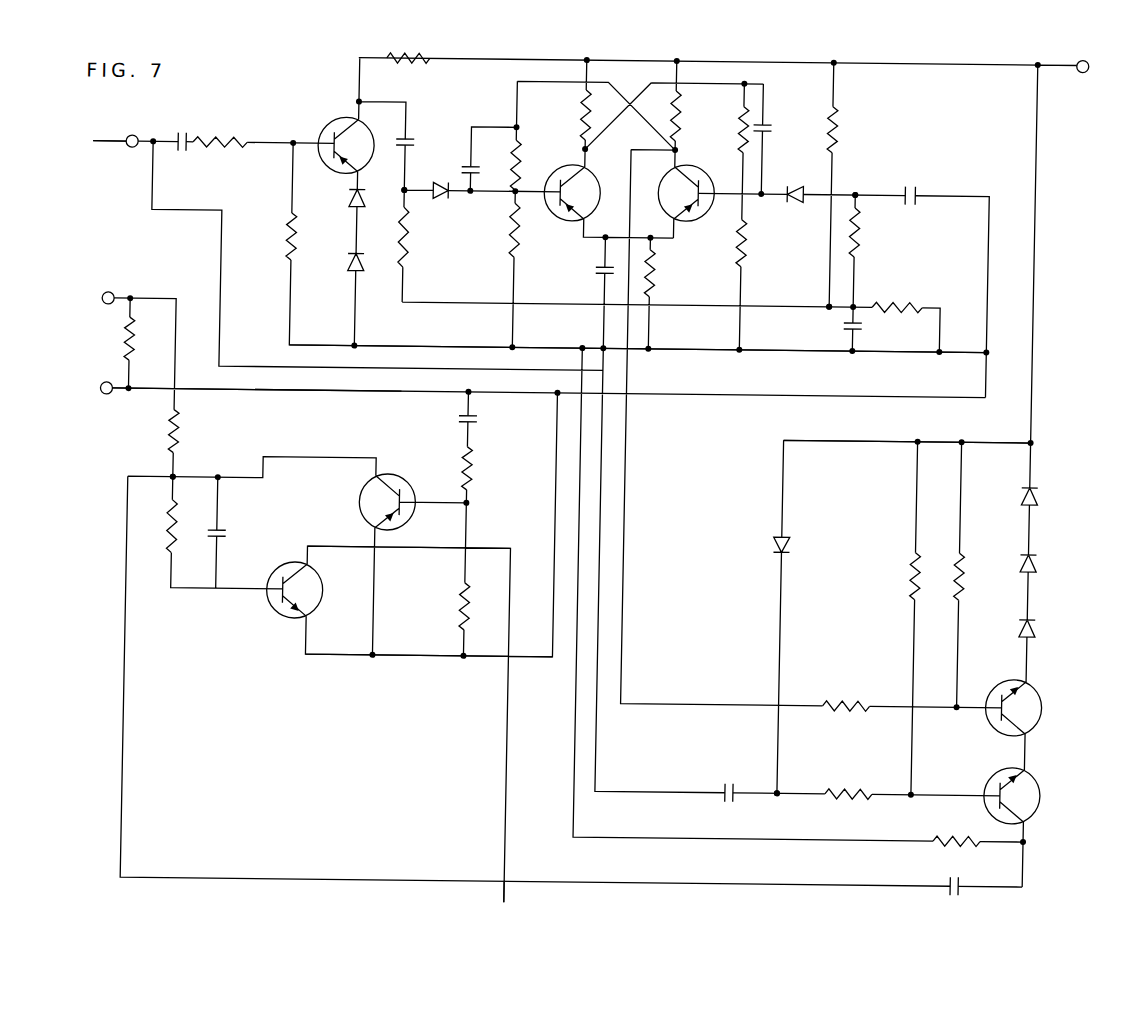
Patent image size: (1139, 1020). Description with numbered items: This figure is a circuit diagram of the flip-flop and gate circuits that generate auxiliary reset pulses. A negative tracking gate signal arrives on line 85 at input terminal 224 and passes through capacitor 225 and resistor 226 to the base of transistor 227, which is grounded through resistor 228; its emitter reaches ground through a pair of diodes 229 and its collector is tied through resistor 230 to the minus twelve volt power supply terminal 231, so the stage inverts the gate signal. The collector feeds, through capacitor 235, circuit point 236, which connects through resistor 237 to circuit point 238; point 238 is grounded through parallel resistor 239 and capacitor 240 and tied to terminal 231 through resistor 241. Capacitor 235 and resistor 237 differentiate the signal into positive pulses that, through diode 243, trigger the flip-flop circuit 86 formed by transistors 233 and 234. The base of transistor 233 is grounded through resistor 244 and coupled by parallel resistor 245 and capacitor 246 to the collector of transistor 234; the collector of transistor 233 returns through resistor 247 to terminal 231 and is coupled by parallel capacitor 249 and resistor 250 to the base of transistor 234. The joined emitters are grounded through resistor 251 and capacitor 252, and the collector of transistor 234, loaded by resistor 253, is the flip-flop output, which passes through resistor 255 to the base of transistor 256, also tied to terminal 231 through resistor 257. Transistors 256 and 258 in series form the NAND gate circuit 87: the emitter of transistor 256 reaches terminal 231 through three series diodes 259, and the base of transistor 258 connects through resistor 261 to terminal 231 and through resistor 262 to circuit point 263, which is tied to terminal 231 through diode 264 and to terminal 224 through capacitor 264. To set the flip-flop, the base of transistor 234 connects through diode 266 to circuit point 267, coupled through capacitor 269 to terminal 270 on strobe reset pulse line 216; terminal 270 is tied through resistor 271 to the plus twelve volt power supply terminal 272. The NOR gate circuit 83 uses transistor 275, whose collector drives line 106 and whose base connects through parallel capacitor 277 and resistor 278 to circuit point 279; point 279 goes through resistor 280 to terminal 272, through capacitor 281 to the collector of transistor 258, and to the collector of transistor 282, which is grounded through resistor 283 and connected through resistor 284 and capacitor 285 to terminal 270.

The tracking gate signal line 85 is at (89, 148).
The input terminal 224 is at (128, 140).
The capacitor 225 is at (181, 139).
The resistor 226 is at (206, 154).
The transistor 227 is at (325, 126).
The resistor 228 is at (283, 243).
The pair of diodes 229 is at (348, 256).
The resistor 230 is at (392, 59).
The power supply terminal 231 is at (1073, 72).
The transistor 233 is at (558, 213).
The transistor 234 is at (687, 212).
The capacitor 235 is at (402, 142).
The circuit point 236 is at (400, 190).
The resistor 237 is at (401, 242).
The circuit point 238 is at (825, 304).
The resistor 239 is at (879, 304).
The capacitor 240 is at (840, 329).
The resistor 241 is at (829, 135).
The diode 243 is at (433, 198).
The resistor 244 is at (509, 251).
The resistor 245 is at (511, 171).
The capacitor 246 is at (466, 166).
The resistor 247 is at (573, 117).
The capacitor 249 is at (761, 128).
The resistor 250 is at (731, 134).
The resistor 251 is at (651, 277).
The capacitor 252 is at (594, 275).
The resistor 253 is at (670, 113).
The resistor 255 is at (844, 700).
The transistor 256 is at (1035, 697).
The resistor 257 is at (964, 584).
The transistor 258 is at (1034, 787).
The three diodes 259 is at (1034, 614).
The resistor 261 is at (914, 574).
The resistor 262 is at (843, 794).
The circuit point 263 is at (783, 791).
The diode and capacitor 264 is at (853, 237).
The diode 266 is at (790, 200).
The circuit point 267 is at (852, 192).
The capacitor 269 is at (915, 196).
The strobe reset pulse input terminal 270 is at (107, 398).
The resistor 271 is at (129, 365).
The power supply terminal 272 is at (110, 298).
The transistor 275 is at (313, 603).
The capacitor 277 is at (218, 537).
The resistor 278 is at (173, 511).
The circuit point 279 is at (170, 479).
The resistor 280 is at (174, 444).
The capacitor 281 is at (968, 881).
The transistor 282 is at (382, 479).
The resistor 283 is at (460, 608).
The resistor 284 is at (470, 484).
The capacitor 285 is at (469, 424).
The NOR gate circuit 83 is at (344, 680).
The circuit block 86 is at (658, 359).
The NAND gate circuit 87 is at (755, 615).
The line 106 is at (516, 896).
The strobe reset pulse line 216 is at (65, 388).